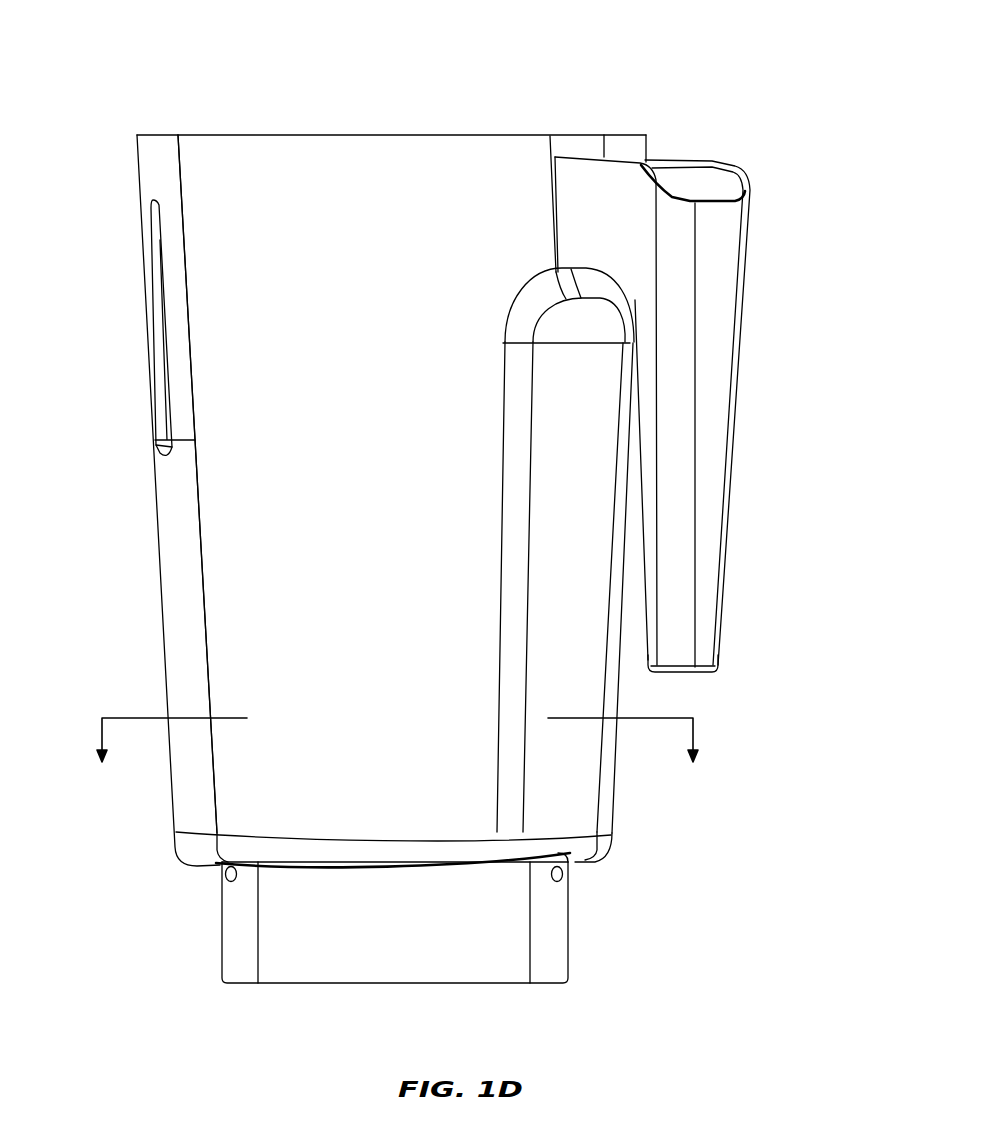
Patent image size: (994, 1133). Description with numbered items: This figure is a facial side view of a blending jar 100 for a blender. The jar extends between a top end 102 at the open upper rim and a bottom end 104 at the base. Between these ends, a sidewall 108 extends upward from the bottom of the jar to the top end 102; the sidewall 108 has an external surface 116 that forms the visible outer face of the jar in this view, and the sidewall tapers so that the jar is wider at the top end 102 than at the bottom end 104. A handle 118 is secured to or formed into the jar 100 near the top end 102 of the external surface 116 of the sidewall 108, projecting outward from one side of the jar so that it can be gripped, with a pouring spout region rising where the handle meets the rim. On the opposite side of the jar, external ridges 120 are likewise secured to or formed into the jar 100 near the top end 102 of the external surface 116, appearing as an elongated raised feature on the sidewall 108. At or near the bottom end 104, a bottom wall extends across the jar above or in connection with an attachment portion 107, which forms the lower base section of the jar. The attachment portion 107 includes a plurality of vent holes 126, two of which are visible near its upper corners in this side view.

The blending jar 100 is at (128, 100).
The top end 102 is at (128, 183).
The bottom end 104 is at (583, 966).
The attachment portion 107 is at (238, 945).
The sidewall 108 is at (224, 477).
The external surface 116 is at (225, 570).
The handle 118 is at (720, 393).
The external ridges 120 is at (158, 308).
The vent holes 126 is at (226, 877).